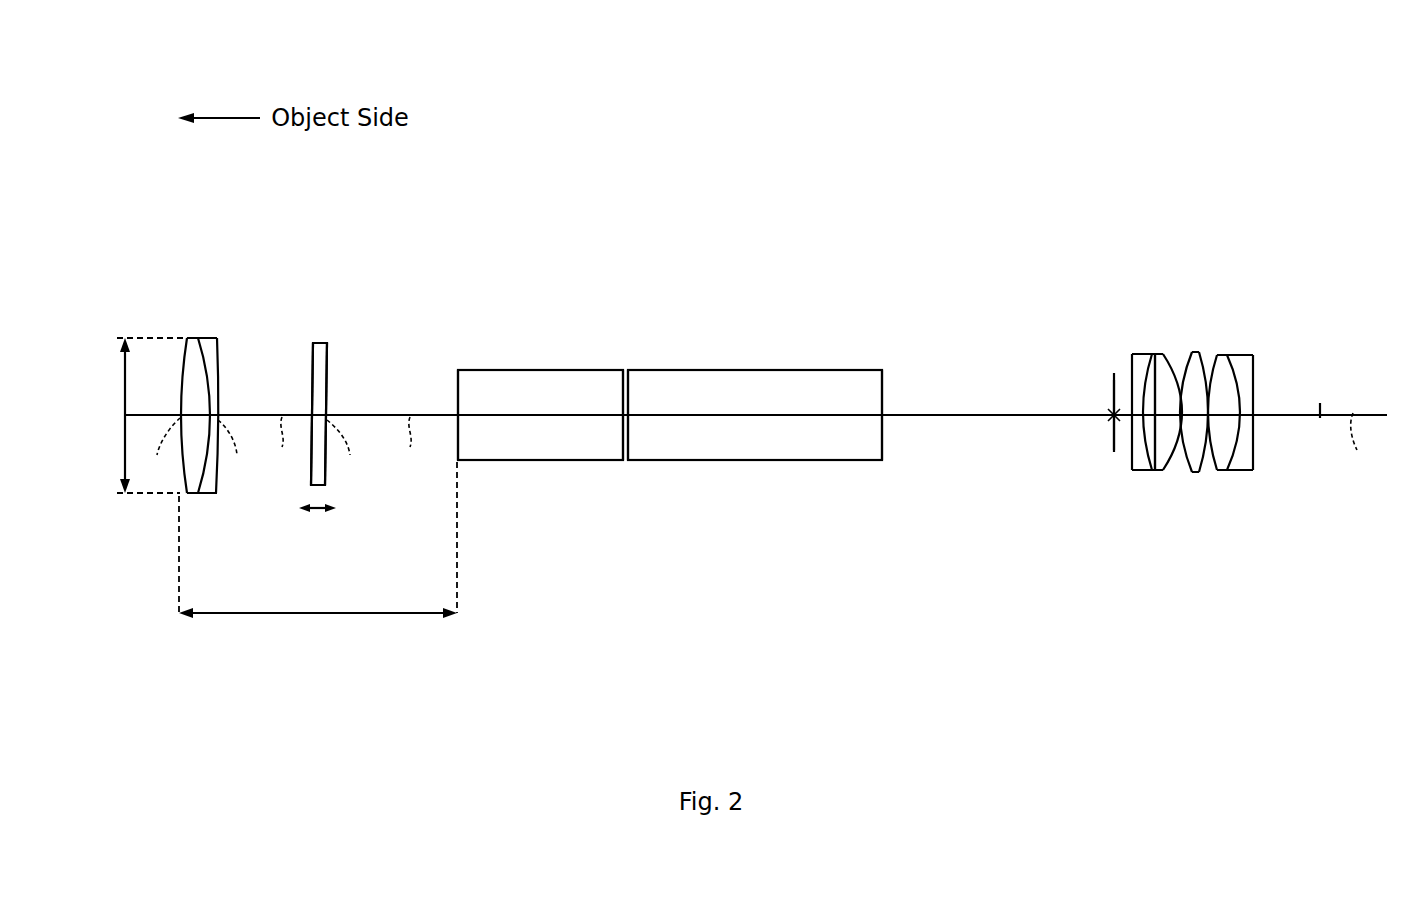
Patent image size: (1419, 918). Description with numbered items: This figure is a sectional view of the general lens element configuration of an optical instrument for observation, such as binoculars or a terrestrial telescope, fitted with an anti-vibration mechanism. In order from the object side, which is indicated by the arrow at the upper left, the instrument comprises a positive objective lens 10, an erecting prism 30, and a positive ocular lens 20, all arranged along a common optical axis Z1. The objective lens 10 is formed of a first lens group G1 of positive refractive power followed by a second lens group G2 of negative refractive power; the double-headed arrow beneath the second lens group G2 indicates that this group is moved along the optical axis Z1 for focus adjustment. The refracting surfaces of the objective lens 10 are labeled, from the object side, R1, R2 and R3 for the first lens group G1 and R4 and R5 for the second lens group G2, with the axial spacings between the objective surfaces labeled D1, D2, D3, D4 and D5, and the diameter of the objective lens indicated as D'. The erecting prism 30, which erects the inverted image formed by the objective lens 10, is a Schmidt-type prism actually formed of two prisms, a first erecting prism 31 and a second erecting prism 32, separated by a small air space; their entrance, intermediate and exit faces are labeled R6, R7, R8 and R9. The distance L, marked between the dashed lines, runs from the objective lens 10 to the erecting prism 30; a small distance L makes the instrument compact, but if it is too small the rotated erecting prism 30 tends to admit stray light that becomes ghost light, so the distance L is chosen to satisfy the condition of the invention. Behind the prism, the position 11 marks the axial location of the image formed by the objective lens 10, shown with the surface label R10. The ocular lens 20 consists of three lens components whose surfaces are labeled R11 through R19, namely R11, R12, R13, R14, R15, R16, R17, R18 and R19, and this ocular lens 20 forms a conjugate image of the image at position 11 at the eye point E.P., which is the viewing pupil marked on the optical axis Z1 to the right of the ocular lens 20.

The objective lens 10 is at (228, 254).
The ocular lens 20 is at (1236, 252).
The erecting prism 30 is at (697, 254).
The first erecting prism 31 is at (563, 470).
The second erecting prism 32 is at (795, 470).
The image position 11 is at (1110, 418).
The first lens group G1 is at (220, 318).
The second lens group G2 is at (320, 343).
The first surface R1 is at (182, 372).
The second surface R2 is at (211, 390).
The third surface R3 is at (220, 358).
The fourth surface R4 is at (312, 362).
The fifth surface R5 is at (328, 363).
The sixth surface R6 is at (459, 375).
The seventh surface R7 is at (623, 381).
The eighth surface R8 is at (628, 381).
The ninth surface R9 is at (883, 377).
The tenth surface (field stop plane) R10 is at (1113, 385).
The eleventh surface R11 is at (1131, 368).
The twelfth surface R12 is at (1135, 467).
The thirteenth surface R13 is at (1153, 352).
The fourteenth surface R14 is at (1172, 467).
The fifteenth surface R15 is at (1181, 358).
The sixteenth surface R16 is at (1197, 460).
The seventeenth surface R17 is at (1212, 360).
The eighteenth surface R18 is at (1237, 460).
The nineteenth surface R19 is at (1253, 372).
The axial distance D1 is at (149, 451).
The axial distance D2 is at (237, 456).
The axial distance D3 is at (283, 451).
The axial distance D4 is at (348, 456).
The axial distance D5 is at (407, 451).
The diameter of the objective lens D' is at (136, 415).
The distance L is at (318, 540).
The eye point E.P. is at (1322, 388).
The optical axis Z1 is at (1355, 449).